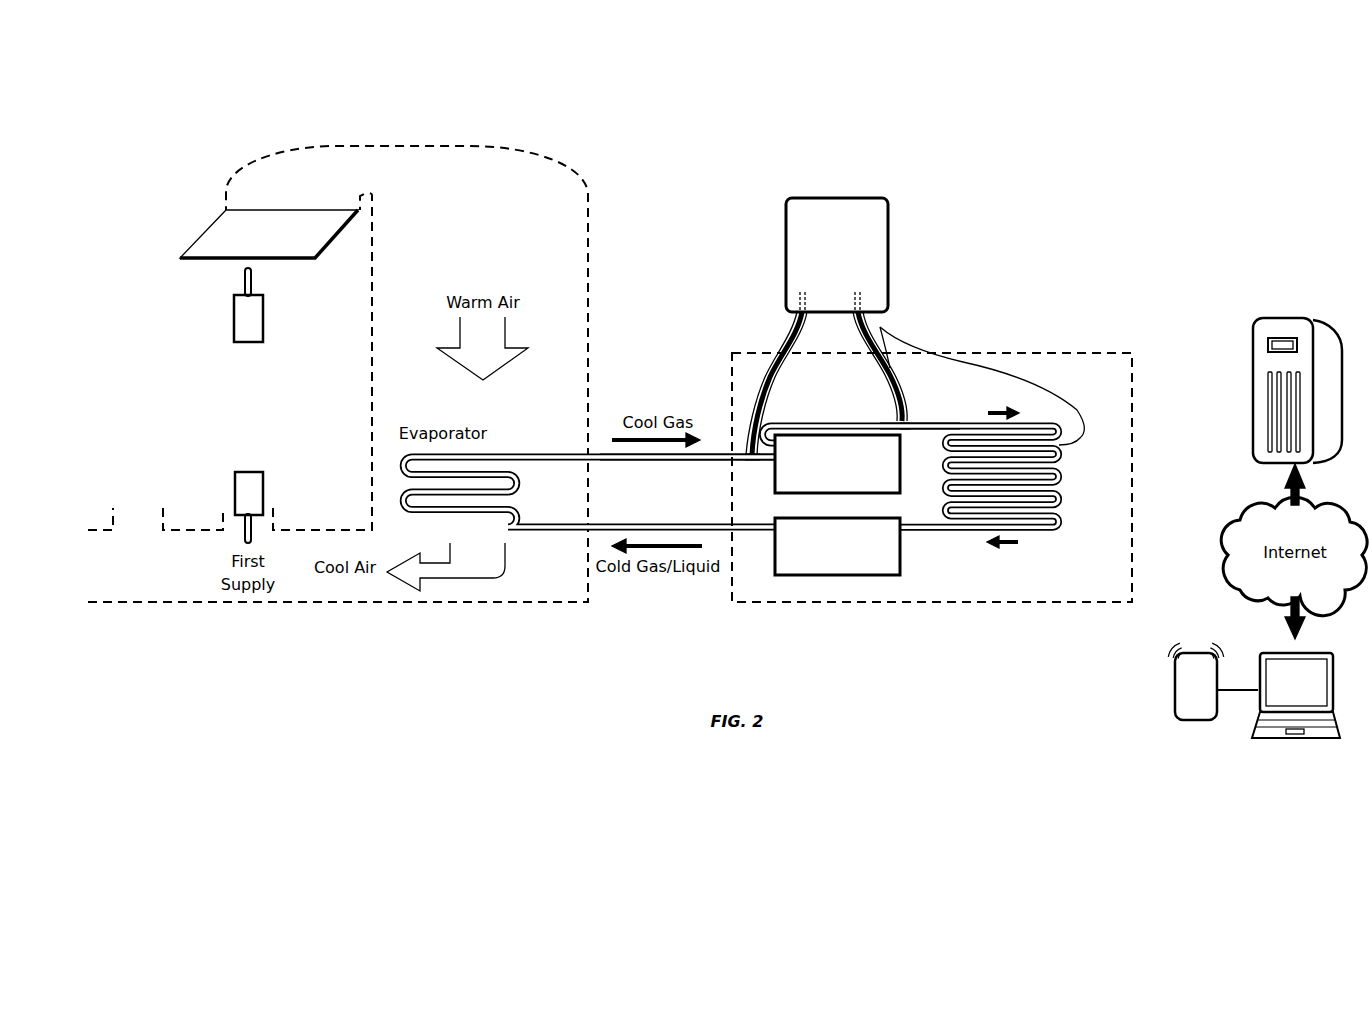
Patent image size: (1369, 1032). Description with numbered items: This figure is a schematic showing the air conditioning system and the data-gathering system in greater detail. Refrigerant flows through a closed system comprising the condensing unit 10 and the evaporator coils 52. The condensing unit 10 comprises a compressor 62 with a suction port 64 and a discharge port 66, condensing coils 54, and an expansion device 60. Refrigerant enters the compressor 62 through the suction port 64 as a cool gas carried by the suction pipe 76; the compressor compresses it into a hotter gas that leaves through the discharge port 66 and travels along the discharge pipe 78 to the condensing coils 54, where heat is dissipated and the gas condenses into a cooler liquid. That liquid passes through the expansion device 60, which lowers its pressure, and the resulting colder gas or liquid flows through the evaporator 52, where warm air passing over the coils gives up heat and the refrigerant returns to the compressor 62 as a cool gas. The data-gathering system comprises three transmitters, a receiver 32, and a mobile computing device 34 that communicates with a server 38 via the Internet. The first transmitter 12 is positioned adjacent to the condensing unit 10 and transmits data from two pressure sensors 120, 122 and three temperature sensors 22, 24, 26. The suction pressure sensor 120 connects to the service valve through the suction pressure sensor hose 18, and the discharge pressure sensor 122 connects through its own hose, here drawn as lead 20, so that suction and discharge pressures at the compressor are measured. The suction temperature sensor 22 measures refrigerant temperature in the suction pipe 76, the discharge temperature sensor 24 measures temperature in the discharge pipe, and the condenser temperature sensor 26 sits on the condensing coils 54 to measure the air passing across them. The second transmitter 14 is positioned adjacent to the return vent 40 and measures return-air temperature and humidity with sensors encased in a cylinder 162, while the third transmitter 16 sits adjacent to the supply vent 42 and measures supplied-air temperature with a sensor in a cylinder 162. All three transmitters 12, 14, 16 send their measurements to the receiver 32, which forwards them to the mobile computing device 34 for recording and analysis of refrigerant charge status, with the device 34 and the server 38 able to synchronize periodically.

The condensing unit 10 is at (1095, 353).
The first transmitter 12 is at (829, 245).
The second transmitter 14 is at (257, 328).
The third transmitter 16 is at (257, 504).
The suction pressure sensor hose 18 is at (748, 452).
The discharge line temperature sensor lead 20 is at (902, 421).
The suction temperature sensor 22 is at (737, 455).
The discharge temperature sensor 24 is at (914, 421).
The condenser temperature sensor 26 is at (1078, 412).
The receiver 32 is at (1187, 695).
The mobile computing device 34 is at (1286, 695).
The server 38 is at (1253, 388).
The return vent 40 is at (261, 255).
The supply vent 42 is at (188, 583).
The evaporator coils 52 is at (520, 468).
The condensing coils 54 is at (1060, 460).
The expansion device 60 is at (793, 568).
The compressor 62 is at (828, 483).
The suction port 64 is at (738, 470).
The discharge port 66 is at (858, 418).
The suction pipe 76 is at (683, 459).
The discharge line 78 is at (947, 422).
The suction pressure sensor 120 is at (803, 292).
The discharge pressure sensor 122 is at (857, 292).
The cylinder 162 is at (243, 280).